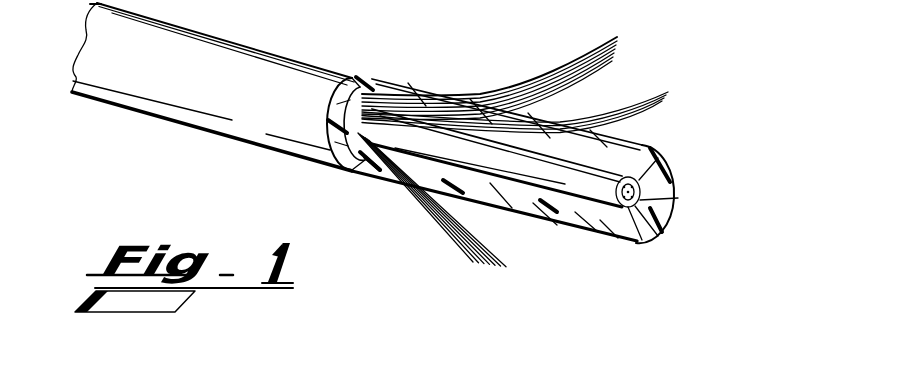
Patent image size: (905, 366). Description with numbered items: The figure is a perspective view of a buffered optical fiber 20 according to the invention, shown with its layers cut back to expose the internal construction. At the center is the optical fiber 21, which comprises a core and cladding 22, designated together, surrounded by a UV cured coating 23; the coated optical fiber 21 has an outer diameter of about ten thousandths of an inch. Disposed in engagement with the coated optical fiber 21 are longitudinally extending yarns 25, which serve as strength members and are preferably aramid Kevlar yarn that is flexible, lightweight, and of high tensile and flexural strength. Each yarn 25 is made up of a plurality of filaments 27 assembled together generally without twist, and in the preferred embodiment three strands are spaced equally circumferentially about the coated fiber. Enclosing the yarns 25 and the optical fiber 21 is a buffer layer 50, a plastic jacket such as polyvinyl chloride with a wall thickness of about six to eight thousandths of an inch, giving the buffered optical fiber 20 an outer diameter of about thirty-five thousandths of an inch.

The buffered optical fiber 20 is at (213, 162).
The buffer layer 50 is at (357, 92).
The optical fiber 21 is at (578, 205).
The core and cladding 22 is at (622, 203).
The UV cured coating 23 is at (642, 176).
The yarn 25 is at (528, 78).
The filaments 27 is at (490, 272).